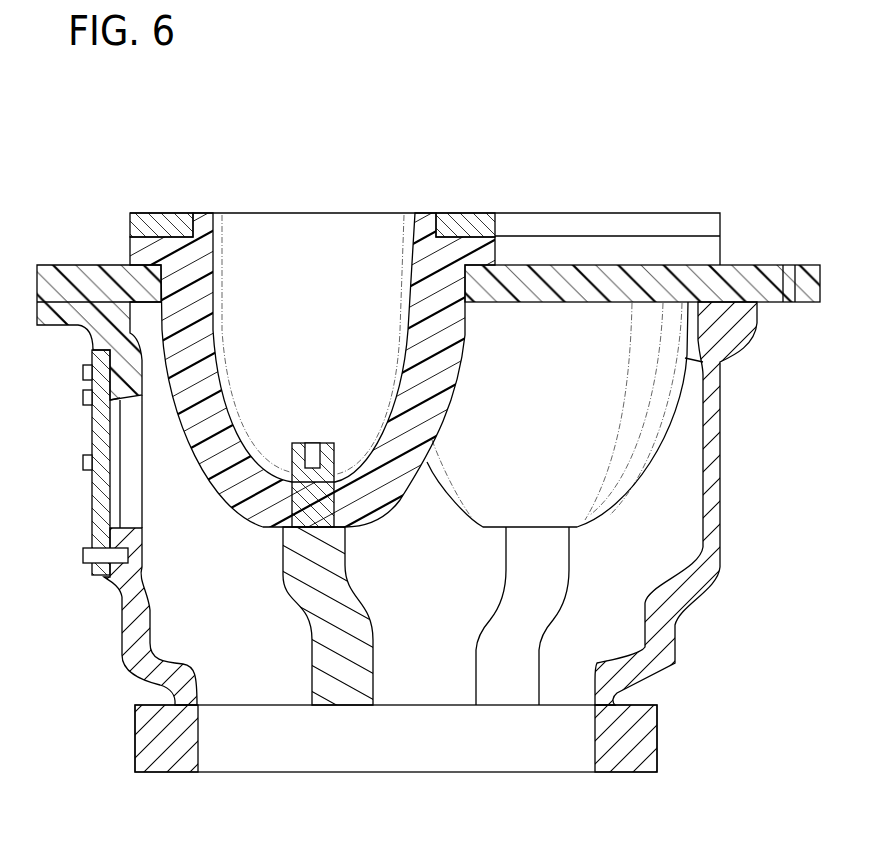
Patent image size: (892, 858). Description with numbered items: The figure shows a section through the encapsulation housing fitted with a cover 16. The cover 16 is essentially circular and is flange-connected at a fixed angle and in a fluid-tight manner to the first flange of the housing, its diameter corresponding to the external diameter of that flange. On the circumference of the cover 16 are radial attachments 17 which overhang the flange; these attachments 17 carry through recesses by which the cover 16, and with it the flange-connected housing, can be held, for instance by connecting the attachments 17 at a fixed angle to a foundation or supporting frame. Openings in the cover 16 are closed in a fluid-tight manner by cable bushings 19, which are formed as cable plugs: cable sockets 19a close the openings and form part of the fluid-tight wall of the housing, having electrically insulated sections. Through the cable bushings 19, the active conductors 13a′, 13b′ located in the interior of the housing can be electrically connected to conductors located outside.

The cover 16 is at (90, 265).
The radial attachments 17 is at (812, 265).
The cable bushings 19 is at (202, 220).
The cable sockets 19a is at (392, 513).
The active conductor 13a′ is at (338, 685).
The active conductor 13b′ is at (510, 685).